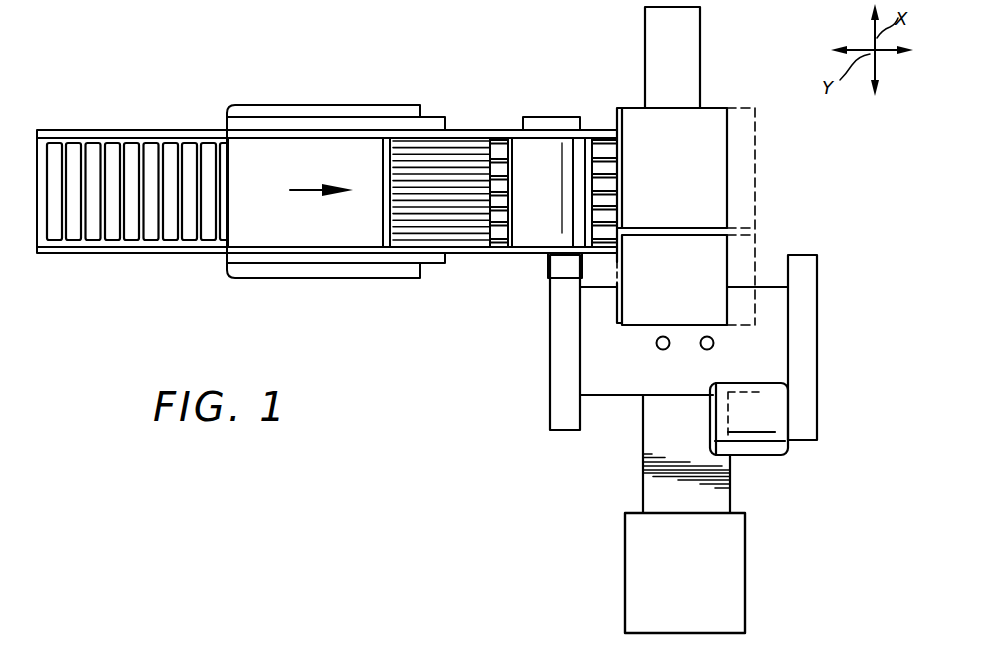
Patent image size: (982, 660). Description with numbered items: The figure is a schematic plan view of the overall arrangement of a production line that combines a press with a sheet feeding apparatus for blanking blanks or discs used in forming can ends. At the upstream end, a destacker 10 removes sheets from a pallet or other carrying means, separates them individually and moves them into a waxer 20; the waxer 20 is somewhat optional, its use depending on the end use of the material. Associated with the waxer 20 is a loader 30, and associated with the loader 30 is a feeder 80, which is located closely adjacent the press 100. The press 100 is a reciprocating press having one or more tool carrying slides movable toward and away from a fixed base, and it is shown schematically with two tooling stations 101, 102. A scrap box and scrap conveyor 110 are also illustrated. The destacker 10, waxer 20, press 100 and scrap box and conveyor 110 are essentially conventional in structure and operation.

The destacker 10 is at (318, 105).
The waxer 20 is at (538, 148).
The loader 30 is at (705, 184).
The feeder 80 is at (706, 257).
The press 100 is at (550, 370).
The tooling station 101 is at (658, 348).
The tooling station 102 is at (712, 348).
The scrap box and scrap conveyor 110 is at (625, 578).